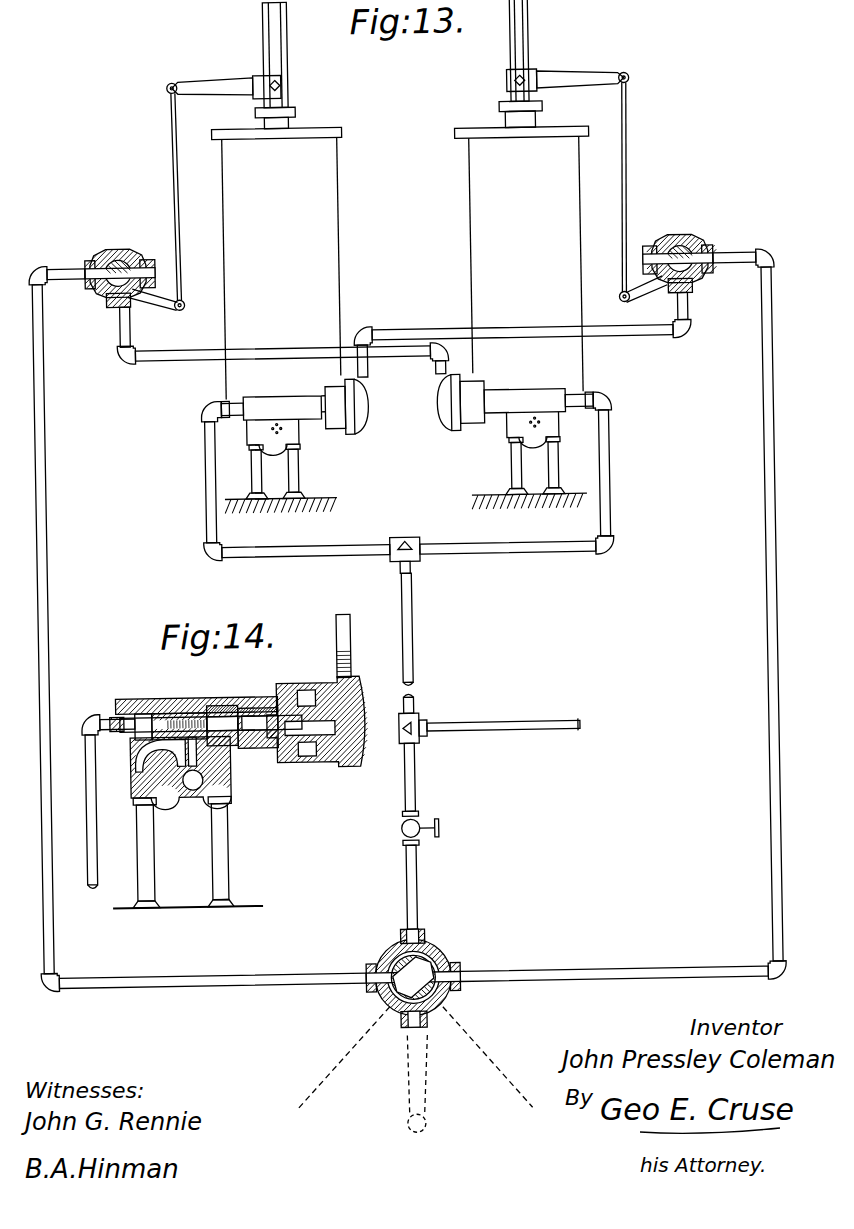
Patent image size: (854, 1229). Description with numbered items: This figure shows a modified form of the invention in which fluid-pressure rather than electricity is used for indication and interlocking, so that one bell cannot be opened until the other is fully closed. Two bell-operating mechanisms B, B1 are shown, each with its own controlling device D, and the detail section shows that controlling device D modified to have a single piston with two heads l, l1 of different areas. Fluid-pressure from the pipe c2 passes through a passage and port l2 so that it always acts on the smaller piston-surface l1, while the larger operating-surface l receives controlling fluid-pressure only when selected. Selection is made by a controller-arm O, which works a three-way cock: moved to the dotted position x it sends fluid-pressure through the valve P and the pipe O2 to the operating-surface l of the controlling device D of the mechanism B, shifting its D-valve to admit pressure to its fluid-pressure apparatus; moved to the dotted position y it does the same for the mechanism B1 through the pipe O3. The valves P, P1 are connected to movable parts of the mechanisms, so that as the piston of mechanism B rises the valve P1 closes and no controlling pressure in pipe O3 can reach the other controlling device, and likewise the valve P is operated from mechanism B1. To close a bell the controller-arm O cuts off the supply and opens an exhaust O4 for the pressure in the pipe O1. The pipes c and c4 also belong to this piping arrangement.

In FIG. 13, the bell-operating mechanism B is at (543, 196).
In FIG. 13, the bell-operating mechanism B1 is at (255, 200).
In FIG. 13, the valve P is at (126, 254).
In FIG. 13, the valve P1 is at (685, 247).
In FIG. 13, the controller-arm O is at (432, 967).
In FIG. 13, the pipe O1 is at (48, 597).
In FIG. 13, the pipe O2 is at (199, 364).
In FIG. 13, the pipe O3 is at (767, 589).
In FIG. 13, the exhaust O4 is at (397, 1030).
In FIG. 13, the controlling device D is at (300, 396).
In FIG. 14, the controlling device D is at (218, 694).
In FIG. 13, the pipe c is at (586, 712).
In FIG. 13, the pipe c2 is at (630, 476).
In FIG. 14, the pipe c2 is at (96, 838).
In FIG. 13, the pipe c4 is at (413, 877).
In FIG. 14, the piston head l is at (350, 721).
In FIG. 14, the piston head l1 is at (243, 705).
In FIG. 14, the passage and port l2 is at (220, 702).
In FIG. 13, the dotted position x is at (495, 1063).
In FIG. 13, the dotted position y is at (343, 1066).